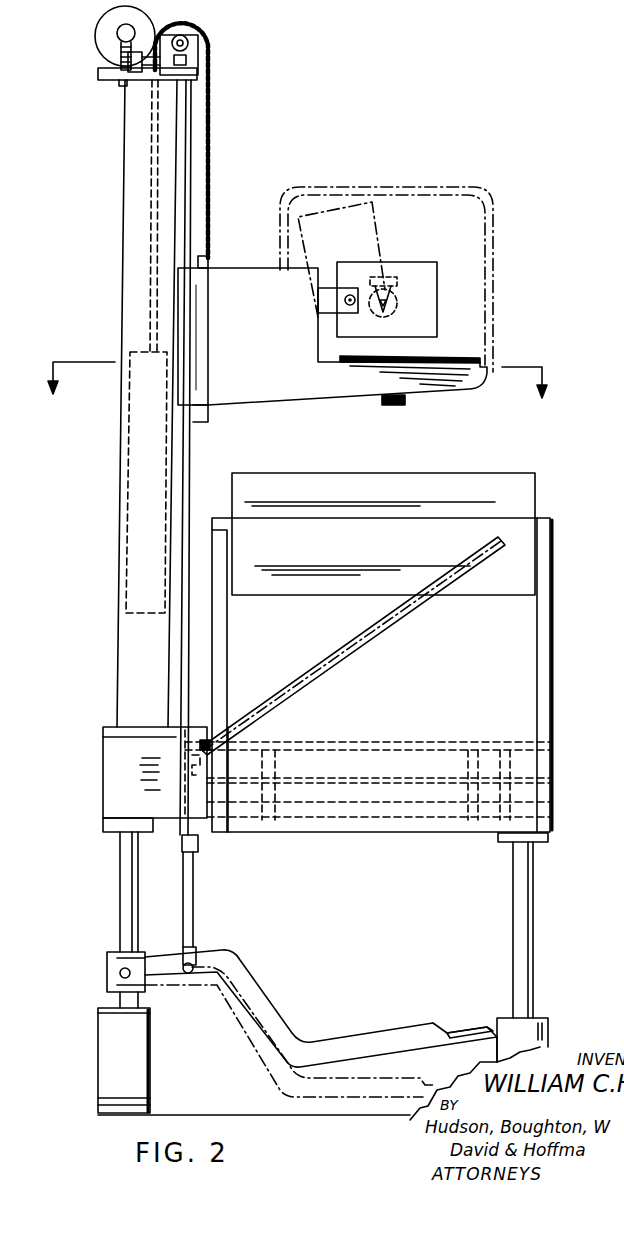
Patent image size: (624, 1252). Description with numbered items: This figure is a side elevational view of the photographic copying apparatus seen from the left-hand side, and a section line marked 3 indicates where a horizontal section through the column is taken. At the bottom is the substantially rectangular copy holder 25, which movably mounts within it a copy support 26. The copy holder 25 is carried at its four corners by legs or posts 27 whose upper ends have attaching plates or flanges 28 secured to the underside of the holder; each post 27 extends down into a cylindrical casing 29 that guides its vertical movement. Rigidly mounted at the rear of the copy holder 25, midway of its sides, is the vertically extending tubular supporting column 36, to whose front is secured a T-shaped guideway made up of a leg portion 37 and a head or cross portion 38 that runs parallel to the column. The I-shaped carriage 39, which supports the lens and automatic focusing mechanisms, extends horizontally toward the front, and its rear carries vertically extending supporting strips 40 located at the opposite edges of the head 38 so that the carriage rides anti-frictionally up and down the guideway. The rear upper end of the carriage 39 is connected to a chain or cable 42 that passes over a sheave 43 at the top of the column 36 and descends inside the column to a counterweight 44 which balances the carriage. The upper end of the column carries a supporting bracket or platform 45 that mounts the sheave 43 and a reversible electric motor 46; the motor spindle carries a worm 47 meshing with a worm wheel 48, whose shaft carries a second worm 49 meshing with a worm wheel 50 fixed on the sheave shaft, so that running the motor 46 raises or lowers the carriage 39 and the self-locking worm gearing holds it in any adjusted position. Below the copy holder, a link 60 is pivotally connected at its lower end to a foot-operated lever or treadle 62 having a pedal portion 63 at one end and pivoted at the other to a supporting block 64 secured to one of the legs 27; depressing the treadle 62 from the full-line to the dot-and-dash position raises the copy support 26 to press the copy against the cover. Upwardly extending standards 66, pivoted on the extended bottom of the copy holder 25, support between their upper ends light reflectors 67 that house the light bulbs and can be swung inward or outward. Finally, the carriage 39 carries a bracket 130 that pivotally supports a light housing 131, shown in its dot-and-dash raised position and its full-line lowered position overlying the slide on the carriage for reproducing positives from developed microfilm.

The section line 3- 3 is at (293, 397).
The copy holder 25 is at (370, 830).
The copy support 26 is at (385, 785).
The legs or posts 27 is at (135, 892).
The attaching plates or flanges 28 is at (550, 838).
The cylindrical casing 29 is at (137, 1052).
The supporting column 36 is at (130, 660).
The leg portion 37 is at (182, 492).
The head or cross portion 38 is at (188, 472).
The carriage 39 is at (282, 393).
The supporting strips 40 is at (198, 348).
The chain or cable 42 is at (209, 212).
The sheave 43 is at (205, 22).
The counterweight 44 is at (132, 540).
The supporting bracket or platform 45 is at (100, 78).
The reversible electric motor 46 is at (100, 42).
The worm 47 is at (137, 28).
The worm wheel 48 is at (123, 84).
The worm 49 is at (200, 62).
The worm wheel 50 is at (197, 42).
The link 60 is at (195, 890).
The foot-operated lever or treadle 62 is at (270, 1015).
The pedal portion 63 is at (458, 1025).
The supporting block 64 is at (107, 985).
The standards 66 is at (228, 660).
The light reflectors 67 is at (405, 530).
The bracket 130 is at (355, 308).
The light housing 131 is at (430, 272).